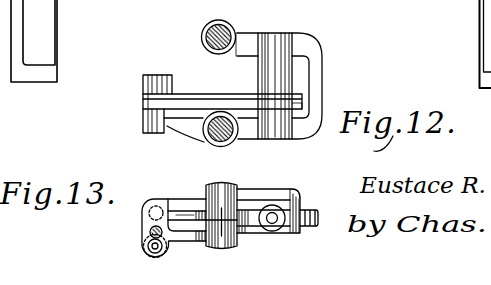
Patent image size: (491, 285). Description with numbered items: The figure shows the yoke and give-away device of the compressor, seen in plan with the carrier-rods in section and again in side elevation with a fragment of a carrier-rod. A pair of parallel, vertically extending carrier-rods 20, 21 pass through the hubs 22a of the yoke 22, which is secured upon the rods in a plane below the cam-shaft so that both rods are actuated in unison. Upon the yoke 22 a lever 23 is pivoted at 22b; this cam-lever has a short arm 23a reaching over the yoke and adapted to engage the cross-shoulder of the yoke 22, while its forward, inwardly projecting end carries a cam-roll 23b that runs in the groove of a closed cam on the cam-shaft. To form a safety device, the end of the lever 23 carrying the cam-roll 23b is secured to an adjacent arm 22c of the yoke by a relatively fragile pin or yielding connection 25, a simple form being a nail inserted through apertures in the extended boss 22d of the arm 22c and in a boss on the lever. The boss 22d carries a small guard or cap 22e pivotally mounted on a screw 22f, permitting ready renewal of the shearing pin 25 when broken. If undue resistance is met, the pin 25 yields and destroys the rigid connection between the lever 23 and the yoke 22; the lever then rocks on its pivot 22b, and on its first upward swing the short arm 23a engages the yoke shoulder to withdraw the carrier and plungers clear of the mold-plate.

In FIG. 12, the carrier-rod 20 is at (227, 148).
In FIG. 12, the carrier-rod 21 is at (207, 27).
In FIG. 12, the yoke 22 is at (308, 50).
In FIG. 13, the yoke 22 is at (302, 209).
In FIG. 12, the hubs 22a is at (233, 28).
In FIG. 13, the hubs 22a is at (240, 182).
In FIG. 12, the pivot 22b is at (278, 32).
In FIG. 13, the pivot 22b is at (272, 220).
In FIG. 12, the arm of the yoke 22c is at (189, 132).
In FIG. 13, the arm of the yoke 22c is at (190, 221).
In FIG. 13, the extended boss 22d is at (148, 232).
In FIG. 13, the guard or cap 22e is at (168, 250).
In FIG. 13, the screw 22f is at (143, 248).
In FIG. 12, the lever 23 is at (194, 97).
In FIG. 13, the lever 23 is at (164, 197).
In FIG. 12, the short arm 23a is at (302, 108).
In FIG. 13, the short arm 23a is at (301, 197).
In FIG. 12, the cam-roll 23b is at (143, 80).
In FIG. 12, the fragile pin or yielding connection 25 is at (143, 115).